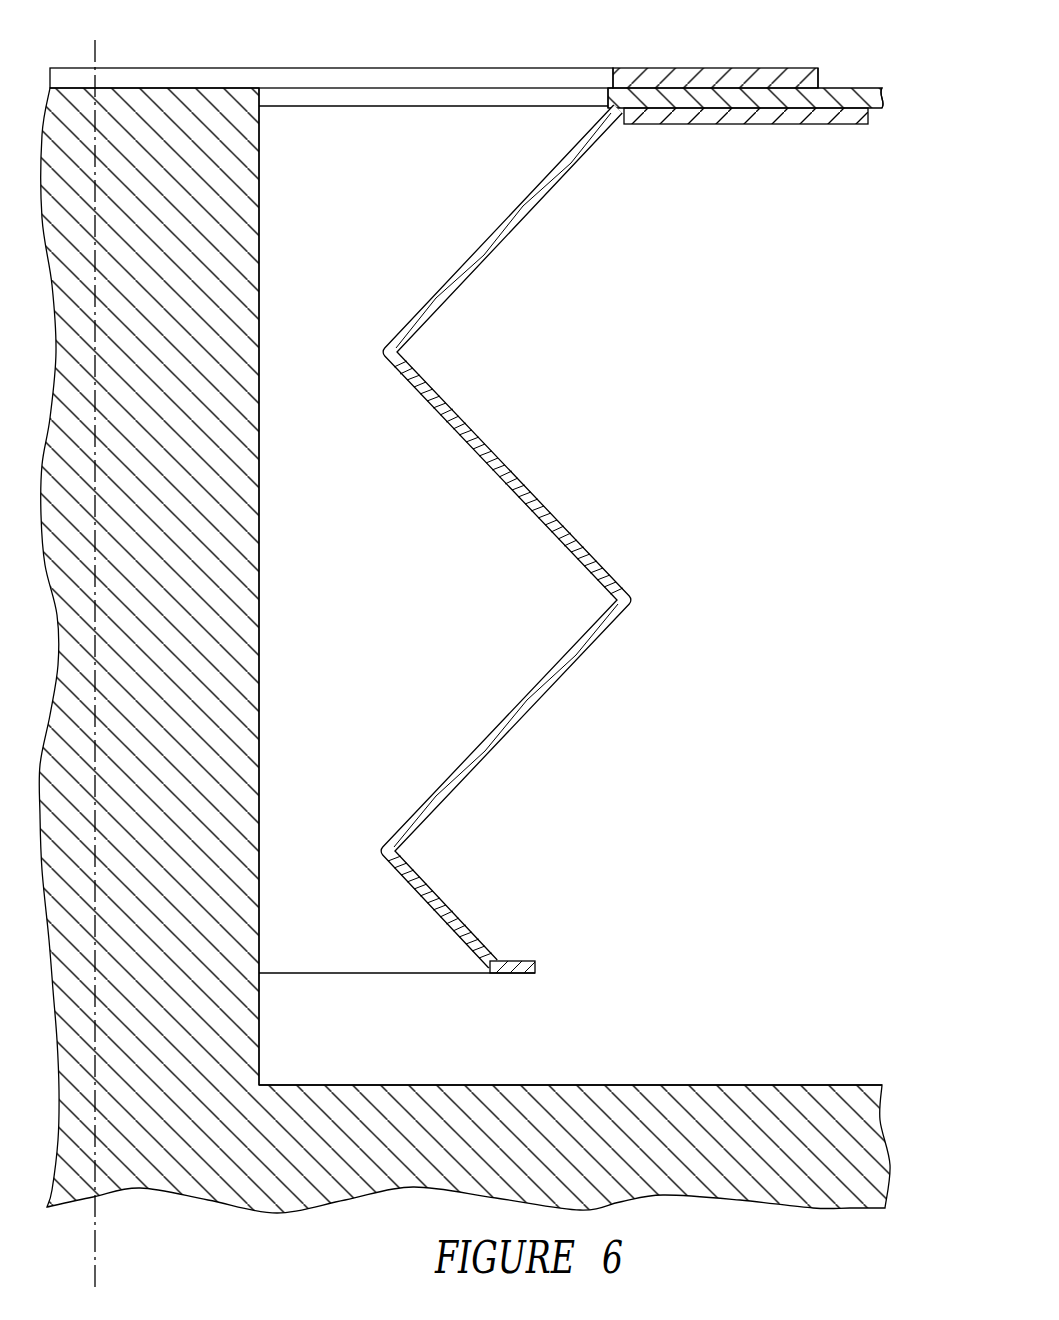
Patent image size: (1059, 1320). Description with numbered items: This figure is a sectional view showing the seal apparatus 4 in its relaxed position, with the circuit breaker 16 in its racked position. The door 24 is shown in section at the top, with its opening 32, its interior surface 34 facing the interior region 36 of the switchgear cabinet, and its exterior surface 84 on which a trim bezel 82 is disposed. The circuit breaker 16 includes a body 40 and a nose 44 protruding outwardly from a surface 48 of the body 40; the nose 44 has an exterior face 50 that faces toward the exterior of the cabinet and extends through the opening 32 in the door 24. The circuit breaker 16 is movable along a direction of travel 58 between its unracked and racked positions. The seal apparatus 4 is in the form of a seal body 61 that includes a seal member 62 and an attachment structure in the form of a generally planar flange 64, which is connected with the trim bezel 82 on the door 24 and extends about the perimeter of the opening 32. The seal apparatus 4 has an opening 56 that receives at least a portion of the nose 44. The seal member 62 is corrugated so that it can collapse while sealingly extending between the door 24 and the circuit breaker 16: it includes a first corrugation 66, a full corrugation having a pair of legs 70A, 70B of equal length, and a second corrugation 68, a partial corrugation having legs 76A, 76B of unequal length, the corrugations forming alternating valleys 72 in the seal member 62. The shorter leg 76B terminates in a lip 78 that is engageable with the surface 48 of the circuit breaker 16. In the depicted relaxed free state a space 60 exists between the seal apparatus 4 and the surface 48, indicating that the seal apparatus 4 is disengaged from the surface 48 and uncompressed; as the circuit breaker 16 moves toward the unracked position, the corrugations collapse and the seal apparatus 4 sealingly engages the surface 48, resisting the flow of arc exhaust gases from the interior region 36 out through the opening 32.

The seal apparatus 4 is at (701, 383).
The circuit breaker 16 is at (147, 78).
The door 24 is at (863, 88).
The opening 32 is at (608, 97).
The interior surface 34 is at (882, 110).
The interior region 36 is at (733, 706).
The body 40 is at (755, 1083).
The nose 44 is at (260, 173).
The surface 48 is at (645, 1083).
The exterior face 50 is at (235, 88).
The opening 56 is at (305, 910).
The direction of travel 58 is at (97, 58).
The space 60 is at (491, 1047).
The seal body 61 is at (632, 139).
The seal member 62 is at (601, 532).
The flange 64 is at (825, 123).
The first corrugation 66 is at (397, 385).
The second corrugation 68 is at (457, 765).
The leg 70A is at (530, 218).
The leg 70B is at (453, 412).
The valleys 72 is at (646, 251).
The leg 76A is at (545, 693).
The leg 76B is at (445, 900).
The lip 78 is at (540, 963).
The trim bezel 82 is at (652, 67).
The exterior surface 84 is at (828, 88).